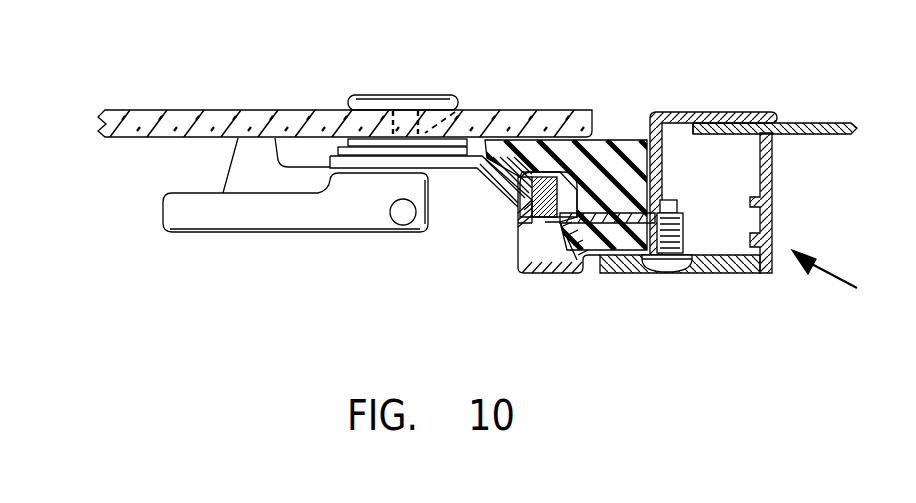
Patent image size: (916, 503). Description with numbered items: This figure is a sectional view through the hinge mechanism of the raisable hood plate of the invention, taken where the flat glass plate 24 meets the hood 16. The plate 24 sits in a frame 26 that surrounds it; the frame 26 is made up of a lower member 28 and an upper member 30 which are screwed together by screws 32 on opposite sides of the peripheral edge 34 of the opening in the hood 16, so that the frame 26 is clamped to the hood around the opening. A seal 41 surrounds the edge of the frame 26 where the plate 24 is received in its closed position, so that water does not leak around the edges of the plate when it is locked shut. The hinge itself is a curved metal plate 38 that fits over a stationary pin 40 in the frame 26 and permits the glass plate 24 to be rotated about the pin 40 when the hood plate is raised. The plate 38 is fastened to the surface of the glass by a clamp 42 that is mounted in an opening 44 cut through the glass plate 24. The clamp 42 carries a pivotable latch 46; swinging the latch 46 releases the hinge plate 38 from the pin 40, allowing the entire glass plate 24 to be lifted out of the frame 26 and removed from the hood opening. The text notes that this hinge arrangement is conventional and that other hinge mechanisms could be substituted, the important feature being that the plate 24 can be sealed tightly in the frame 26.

The hood 16 is at (808, 122).
The plate 24 is at (200, 117).
The frame 26 is at (843, 287).
The lower member 28 is at (748, 275).
The upper member 30 is at (673, 112).
The screws 32 is at (663, 272).
The peripheral edge 34 is at (698, 135).
The curved metal plates 38 is at (500, 180).
The stationary pins 40 is at (535, 197).
The seal 41 is at (617, 138).
The clamp 42 is at (395, 100).
The opening 44 is at (463, 105).
The pivotable latch 46 is at (313, 213).